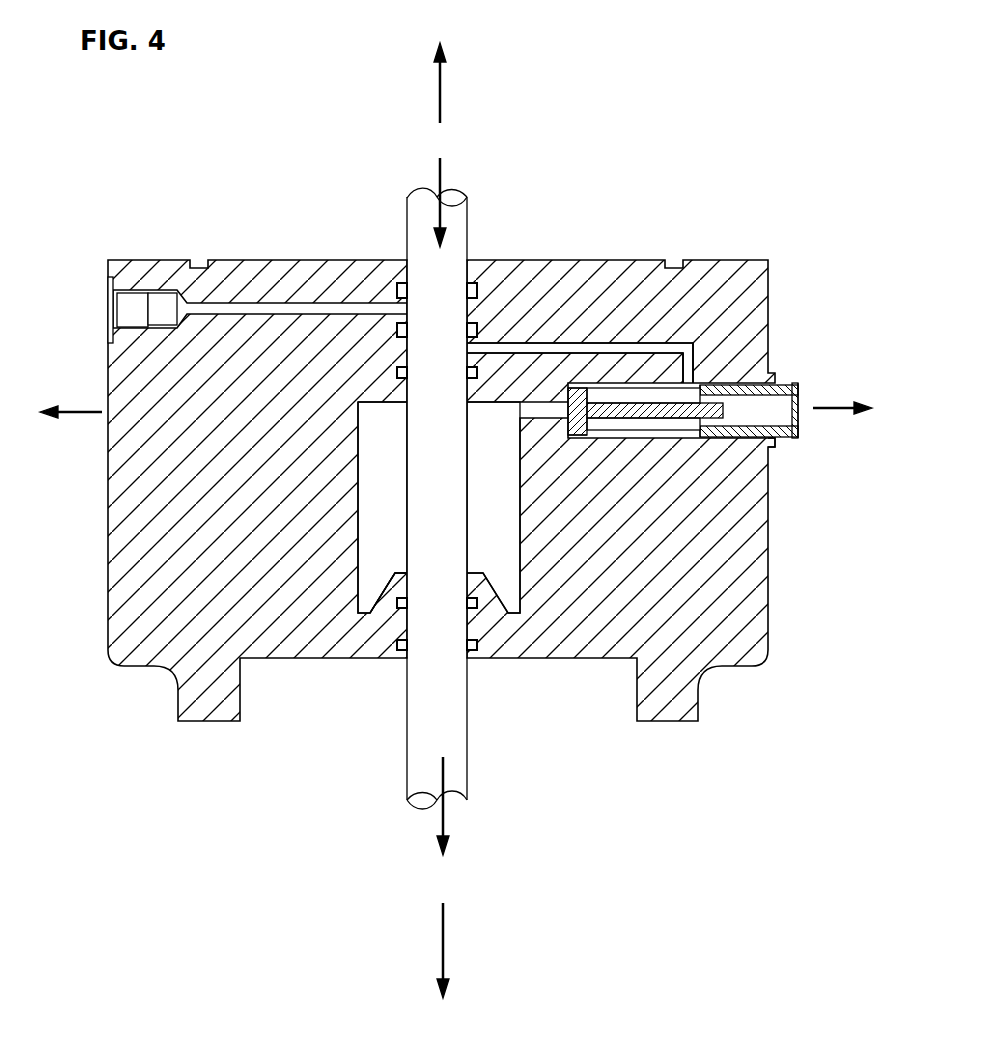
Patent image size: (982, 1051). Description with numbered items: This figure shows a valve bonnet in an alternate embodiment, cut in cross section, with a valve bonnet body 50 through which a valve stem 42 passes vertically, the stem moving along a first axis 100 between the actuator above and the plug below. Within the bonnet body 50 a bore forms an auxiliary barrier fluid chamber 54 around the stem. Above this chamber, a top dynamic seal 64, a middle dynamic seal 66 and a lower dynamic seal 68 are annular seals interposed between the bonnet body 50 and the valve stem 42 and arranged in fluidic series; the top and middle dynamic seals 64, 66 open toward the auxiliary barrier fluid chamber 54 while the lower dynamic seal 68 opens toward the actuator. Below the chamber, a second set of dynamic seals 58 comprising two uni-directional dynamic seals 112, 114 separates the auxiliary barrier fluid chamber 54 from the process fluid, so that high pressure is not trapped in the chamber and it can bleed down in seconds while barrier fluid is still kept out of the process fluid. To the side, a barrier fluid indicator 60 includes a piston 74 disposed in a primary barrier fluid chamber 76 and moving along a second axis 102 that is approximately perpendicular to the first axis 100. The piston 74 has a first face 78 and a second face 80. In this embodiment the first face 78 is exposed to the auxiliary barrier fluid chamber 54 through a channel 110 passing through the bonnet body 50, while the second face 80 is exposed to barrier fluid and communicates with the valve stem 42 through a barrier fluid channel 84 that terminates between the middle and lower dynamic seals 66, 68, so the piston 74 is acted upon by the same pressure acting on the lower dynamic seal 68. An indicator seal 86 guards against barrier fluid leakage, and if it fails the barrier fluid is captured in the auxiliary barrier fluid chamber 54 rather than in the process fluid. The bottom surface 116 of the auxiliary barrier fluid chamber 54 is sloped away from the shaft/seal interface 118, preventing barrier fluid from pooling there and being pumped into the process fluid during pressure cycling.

The valve stem 42 is at (455, 705).
The valve bonnet body 50 is at (240, 266).
The auxiliary barrier fluid chamber 54 is at (393, 448).
The second set of dynamic seals 58 is at (372, 645).
The barrier fluid indicator 60 is at (793, 372).
The top dynamic seal 64 is at (478, 278).
The middle dynamic seal 66 is at (400, 330).
The lower dynamic seal 68 is at (492, 350).
The piston 74 is at (762, 438).
The primary barrier fluid chamber 76 is at (627, 393).
The first face 78 is at (578, 395).
The second face 80 is at (693, 422).
The barrier fluid channel 84 is at (690, 346).
The indicator seal 86 is at (578, 433).
The first axis 100 is at (445, 91).
The second axis 102 is at (100, 413).
The channel 110 is at (565, 386).
The dynamic seal 112 is at (397, 577).
The dynamic seal 114 is at (402, 610).
The bottom surface 116 is at (500, 578).
The shaft/seal interface 118 is at (398, 570).